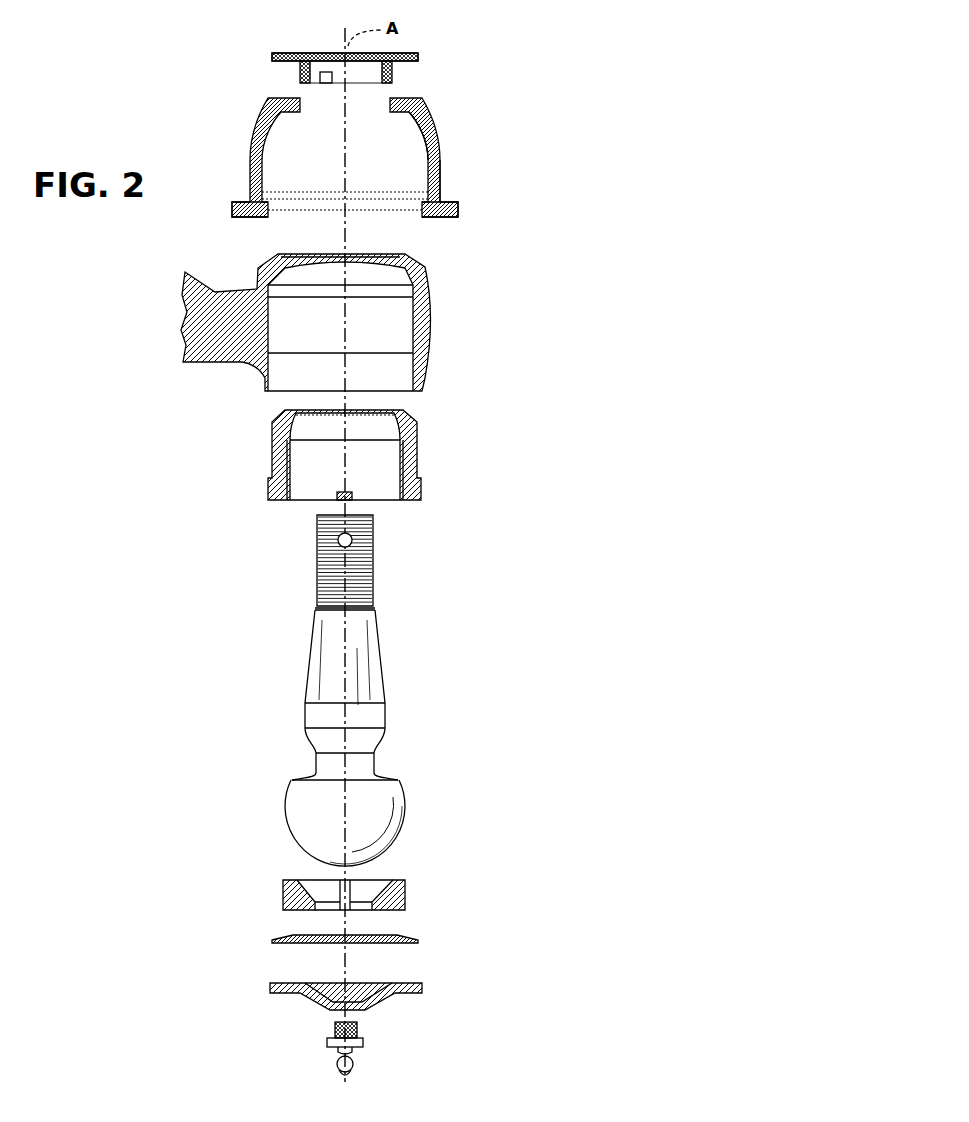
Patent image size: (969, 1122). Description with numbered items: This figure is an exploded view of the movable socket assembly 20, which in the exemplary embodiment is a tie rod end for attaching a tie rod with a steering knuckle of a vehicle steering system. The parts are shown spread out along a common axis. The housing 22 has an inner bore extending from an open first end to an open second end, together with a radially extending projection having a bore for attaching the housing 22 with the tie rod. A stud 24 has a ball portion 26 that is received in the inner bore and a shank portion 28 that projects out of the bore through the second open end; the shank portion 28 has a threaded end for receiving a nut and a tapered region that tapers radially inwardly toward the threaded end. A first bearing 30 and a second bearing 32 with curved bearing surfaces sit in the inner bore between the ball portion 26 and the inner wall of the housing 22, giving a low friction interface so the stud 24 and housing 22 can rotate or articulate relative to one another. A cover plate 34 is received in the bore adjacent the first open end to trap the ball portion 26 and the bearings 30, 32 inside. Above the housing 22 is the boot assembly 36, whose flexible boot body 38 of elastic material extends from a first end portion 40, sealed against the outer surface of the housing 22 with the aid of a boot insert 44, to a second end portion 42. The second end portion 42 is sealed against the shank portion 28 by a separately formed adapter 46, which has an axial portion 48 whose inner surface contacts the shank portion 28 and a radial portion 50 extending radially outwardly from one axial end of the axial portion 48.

The movable socket assembly 20 is at (590, 115).
The housing 22 is at (440, 325).
The stud 24 is at (393, 603).
The ball portion 26 is at (393, 815).
The shank portion 28 is at (385, 672).
The first bearing 30 is at (416, 424).
The second bearing 32 is at (407, 893).
The cover plate 34 is at (405, 994).
The boot assembly 36 is at (442, 124).
The flexible boot body 38 is at (441, 153).
The first end portion 40 is at (458, 217).
The second end portion 42 is at (402, 118).
The boot insert 44 is at (232, 214).
The adapter 46 is at (404, 52).
The axial portion 48 is at (312, 68).
The radial portion 50 is at (418, 57).